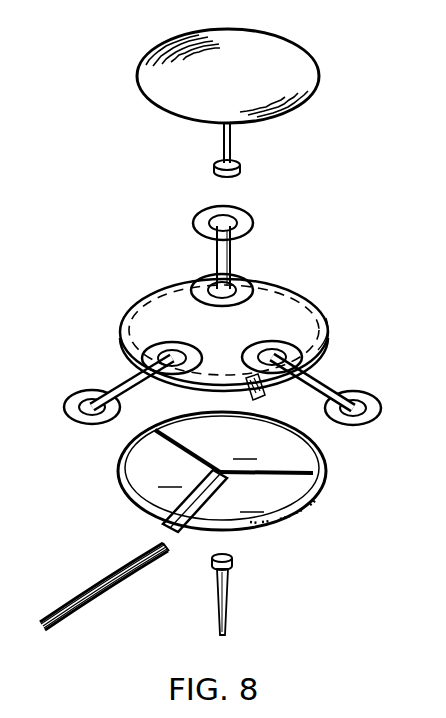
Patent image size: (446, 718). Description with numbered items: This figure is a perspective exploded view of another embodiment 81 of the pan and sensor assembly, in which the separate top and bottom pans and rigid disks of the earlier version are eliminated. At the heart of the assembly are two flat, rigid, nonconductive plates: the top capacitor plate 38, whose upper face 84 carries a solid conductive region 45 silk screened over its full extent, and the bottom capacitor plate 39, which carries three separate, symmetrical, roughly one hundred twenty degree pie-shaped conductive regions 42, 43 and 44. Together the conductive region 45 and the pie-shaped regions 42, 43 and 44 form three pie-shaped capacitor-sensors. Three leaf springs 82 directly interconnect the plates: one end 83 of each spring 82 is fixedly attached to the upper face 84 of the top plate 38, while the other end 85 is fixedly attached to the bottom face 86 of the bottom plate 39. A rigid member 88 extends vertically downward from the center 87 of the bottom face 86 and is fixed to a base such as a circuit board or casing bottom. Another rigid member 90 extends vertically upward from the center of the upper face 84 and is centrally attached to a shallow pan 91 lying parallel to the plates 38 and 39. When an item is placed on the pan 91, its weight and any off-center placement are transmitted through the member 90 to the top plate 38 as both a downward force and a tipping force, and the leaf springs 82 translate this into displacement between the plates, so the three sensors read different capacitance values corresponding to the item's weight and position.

The pan and sensor assembly embodiment 81 is at (222, 332).
The shallow pan 91 is at (306, 34).
The rigid member 90 is at (232, 147).
The spring end 85 is at (247, 217).
The leaf spring 82 is at (232, 252).
The upper face 84 is at (279, 292).
The conductive region 45 is at (318, 318).
The top capacitor plate 38 is at (331, 334).
The spring end 83 is at (236, 302).
The bottom capacitor plate 39 is at (327, 476).
The bottom face 86 is at (307, 522).
The center of bottom face 87 is at (214, 537).
The pie-shaped region 42 is at (244, 449).
The pie-shaped region 43 is at (251, 502).
The pie-shaped region 44 is at (169, 477).
The rigid member 88 is at (230, 596).